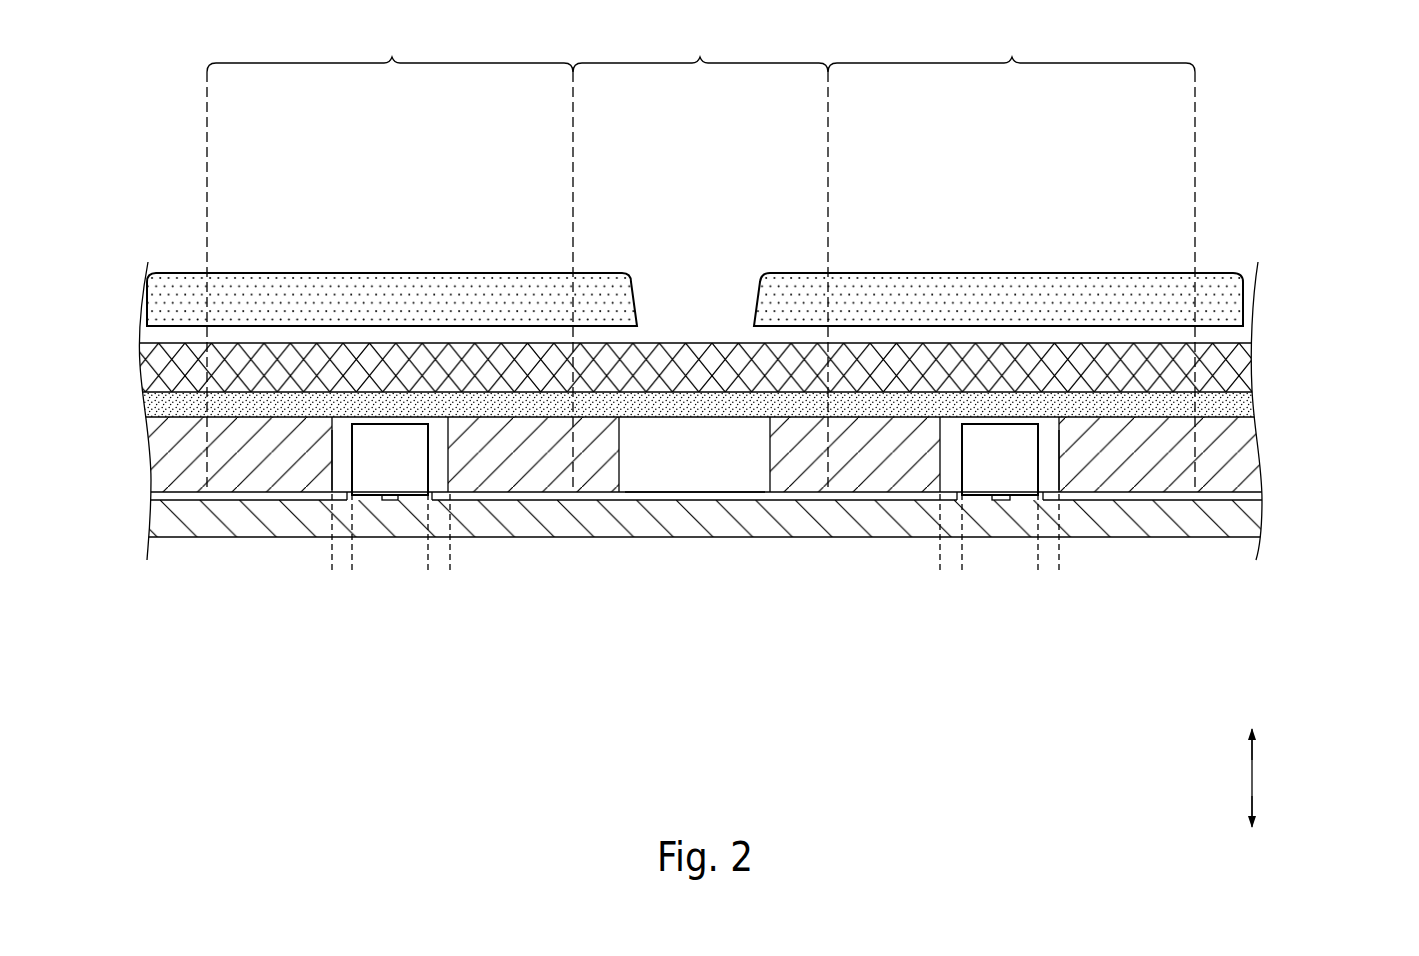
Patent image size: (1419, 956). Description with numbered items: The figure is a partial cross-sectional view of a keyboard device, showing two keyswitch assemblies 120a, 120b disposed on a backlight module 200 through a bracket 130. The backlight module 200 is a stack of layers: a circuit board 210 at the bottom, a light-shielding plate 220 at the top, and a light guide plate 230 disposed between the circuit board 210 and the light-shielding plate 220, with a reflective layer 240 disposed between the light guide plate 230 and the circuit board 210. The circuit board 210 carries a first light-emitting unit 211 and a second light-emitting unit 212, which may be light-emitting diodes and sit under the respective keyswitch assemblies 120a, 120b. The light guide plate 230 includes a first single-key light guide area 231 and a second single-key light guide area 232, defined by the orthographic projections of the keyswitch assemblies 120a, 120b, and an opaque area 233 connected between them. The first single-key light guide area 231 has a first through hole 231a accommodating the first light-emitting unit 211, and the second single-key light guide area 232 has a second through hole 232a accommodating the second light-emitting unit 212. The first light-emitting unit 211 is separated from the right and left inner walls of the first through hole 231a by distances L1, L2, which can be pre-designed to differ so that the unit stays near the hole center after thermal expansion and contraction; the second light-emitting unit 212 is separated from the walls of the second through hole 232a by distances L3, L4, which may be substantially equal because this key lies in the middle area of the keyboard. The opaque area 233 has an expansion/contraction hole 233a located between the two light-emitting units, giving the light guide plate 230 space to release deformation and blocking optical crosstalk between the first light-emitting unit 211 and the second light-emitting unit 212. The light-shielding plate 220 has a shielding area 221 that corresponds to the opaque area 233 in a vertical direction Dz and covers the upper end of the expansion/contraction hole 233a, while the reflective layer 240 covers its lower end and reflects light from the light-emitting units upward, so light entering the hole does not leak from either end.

The backlight module 200 is at (717, 411).
The keyswitch assembly 120a is at (390, 263).
The keyswitch assembly 120b is at (1000, 263).
The bracket 130 is at (1237, 365).
The light-shielding plate 220 is at (766, 405).
The shielding area 221 is at (1255, 403).
The light guide plate 230 is at (1253, 467).
The reflective layer 240 is at (1255, 497).
The circuit board 210 is at (1243, 528).
The first light-emitting unit 211 is at (390, 480).
The second light-emitting unit 212 is at (1000, 480).
The first single-key light guide area 231 is at (390, 256).
The second single-key light guide area 232 is at (1011, 256).
The opaque area 233 is at (700, 256).
The first through hole 231a is at (318, 486).
The second through hole 232a is at (1070, 487).
The expansion/contraction hole 233a is at (694, 500).
The distance L1 is at (408, 562).
The distance L2 is at (310, 562).
The distance L3 is at (1018, 562).
The distance L4 is at (918, 562).
The vertical direction Dz is at (1252, 777).